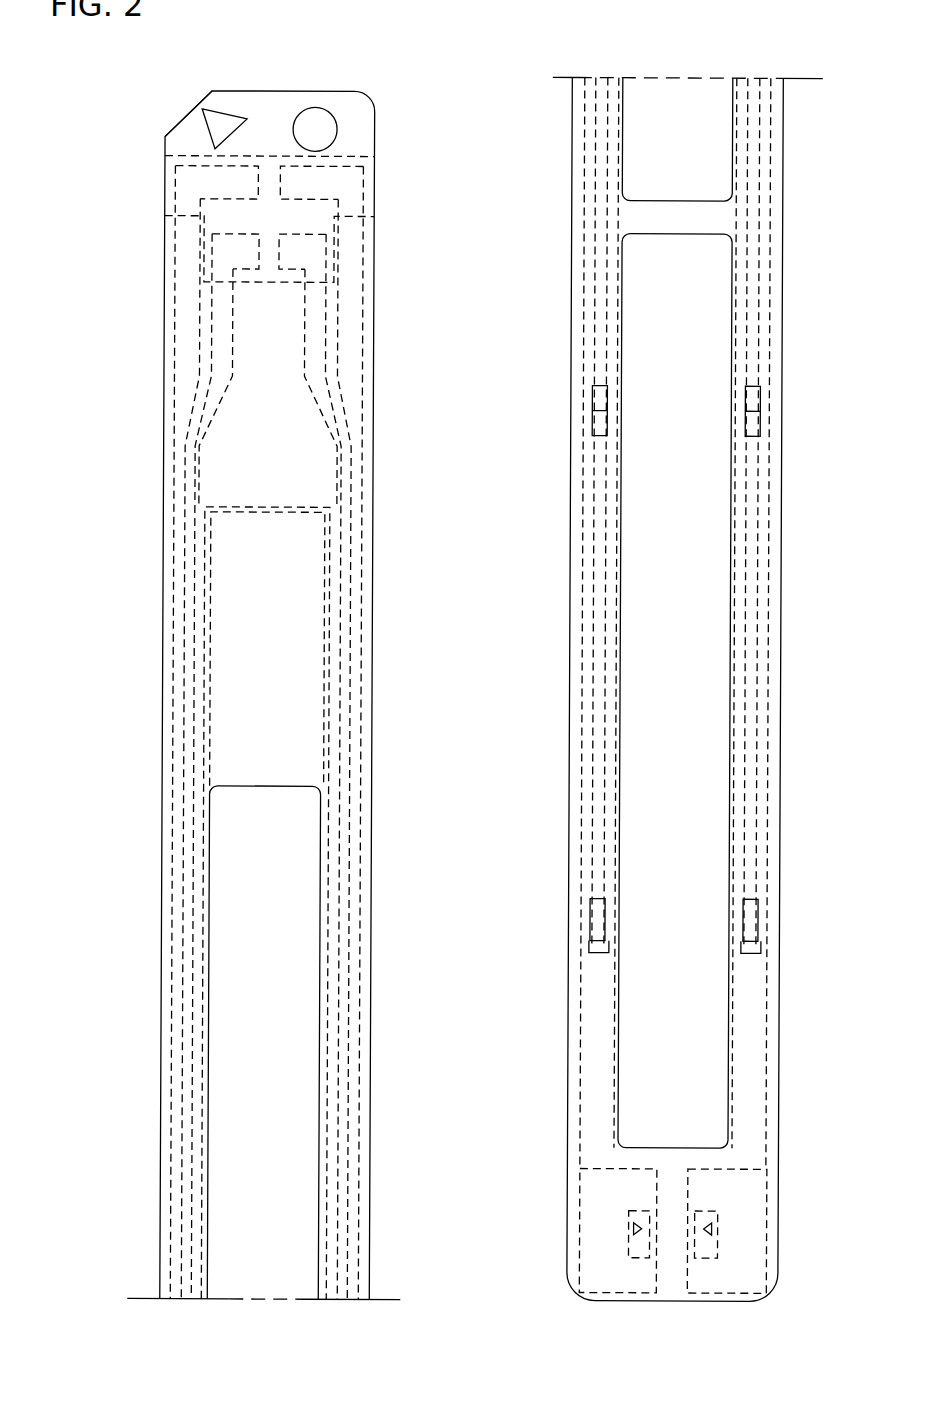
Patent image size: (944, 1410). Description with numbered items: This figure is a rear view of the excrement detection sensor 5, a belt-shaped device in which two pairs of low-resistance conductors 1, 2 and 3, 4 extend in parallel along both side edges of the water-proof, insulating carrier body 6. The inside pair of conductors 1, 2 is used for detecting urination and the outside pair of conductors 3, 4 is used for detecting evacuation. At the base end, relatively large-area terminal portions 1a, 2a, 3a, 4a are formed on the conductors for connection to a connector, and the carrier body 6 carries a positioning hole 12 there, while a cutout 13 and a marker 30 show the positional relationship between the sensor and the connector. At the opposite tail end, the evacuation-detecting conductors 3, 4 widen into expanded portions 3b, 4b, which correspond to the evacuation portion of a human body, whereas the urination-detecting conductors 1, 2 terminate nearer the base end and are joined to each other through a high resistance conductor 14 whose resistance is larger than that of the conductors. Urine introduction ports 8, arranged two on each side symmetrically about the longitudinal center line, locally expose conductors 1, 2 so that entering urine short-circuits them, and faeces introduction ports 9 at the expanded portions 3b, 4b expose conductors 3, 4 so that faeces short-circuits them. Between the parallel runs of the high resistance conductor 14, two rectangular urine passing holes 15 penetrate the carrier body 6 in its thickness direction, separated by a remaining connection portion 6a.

The conductor 1 is at (395, 1055).
The conductor 2 is at (190, 1063).
The conductor 3 is at (398, 948).
The conductor 4 is at (176, 960).
The terminal portion 1a is at (408, 262).
The terminal portion 2a is at (220, 256).
The terminal portion 3a is at (408, 176).
The terminal portion 4a is at (210, 182).
The expanded portion 3b is at (812, 1288).
The expanded portion 4b is at (597, 1267).
The excrement detection sensor 5 is at (150, 616).
The carrier body 6 is at (818, 1068).
The connection portion 6a is at (673, 214).
The urine introduction port 8 is at (800, 892).
The faeces introduction port 9 is at (805, 1203).
The positioning hole 12 is at (297, 118).
The cutout 13 is at (190, 113).
The high resistance conductor 14 is at (325, 1195).
The urine passing hole 15 is at (203, 1143).
The marker 30 is at (233, 64).